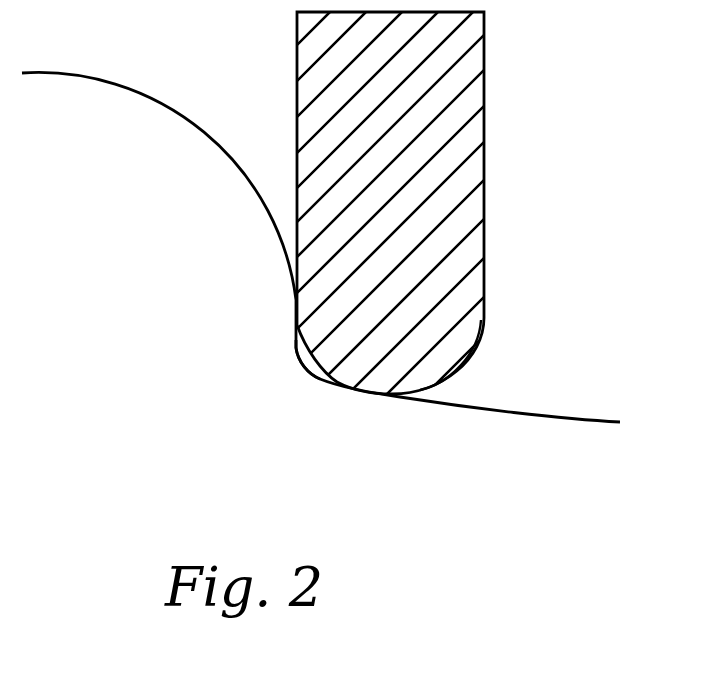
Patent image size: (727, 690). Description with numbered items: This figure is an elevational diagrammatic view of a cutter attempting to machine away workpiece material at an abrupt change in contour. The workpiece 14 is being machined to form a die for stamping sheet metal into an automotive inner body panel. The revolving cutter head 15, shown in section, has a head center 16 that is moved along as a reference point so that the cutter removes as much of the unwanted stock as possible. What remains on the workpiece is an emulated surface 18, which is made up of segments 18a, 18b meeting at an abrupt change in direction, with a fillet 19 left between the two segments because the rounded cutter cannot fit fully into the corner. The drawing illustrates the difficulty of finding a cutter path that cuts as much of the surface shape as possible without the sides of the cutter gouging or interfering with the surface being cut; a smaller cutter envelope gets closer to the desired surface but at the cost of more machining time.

The workpiece 14 is at (338, 280).
The revolving cutter head 15 is at (485, 173).
The head center 16 is at (387, 336).
The emulated surface 18 is at (321, 280).
The segment 18a is at (284, 344).
The segment 18b is at (372, 437).
The fillet 19 is at (305, 372).